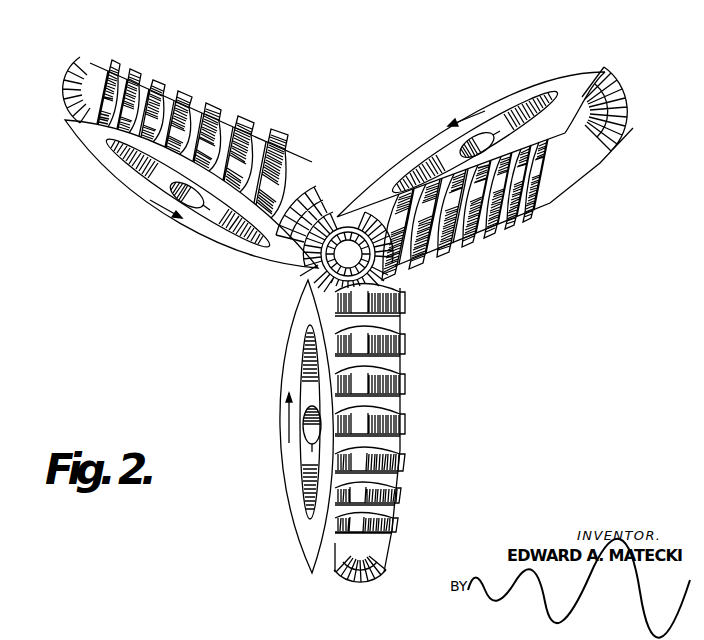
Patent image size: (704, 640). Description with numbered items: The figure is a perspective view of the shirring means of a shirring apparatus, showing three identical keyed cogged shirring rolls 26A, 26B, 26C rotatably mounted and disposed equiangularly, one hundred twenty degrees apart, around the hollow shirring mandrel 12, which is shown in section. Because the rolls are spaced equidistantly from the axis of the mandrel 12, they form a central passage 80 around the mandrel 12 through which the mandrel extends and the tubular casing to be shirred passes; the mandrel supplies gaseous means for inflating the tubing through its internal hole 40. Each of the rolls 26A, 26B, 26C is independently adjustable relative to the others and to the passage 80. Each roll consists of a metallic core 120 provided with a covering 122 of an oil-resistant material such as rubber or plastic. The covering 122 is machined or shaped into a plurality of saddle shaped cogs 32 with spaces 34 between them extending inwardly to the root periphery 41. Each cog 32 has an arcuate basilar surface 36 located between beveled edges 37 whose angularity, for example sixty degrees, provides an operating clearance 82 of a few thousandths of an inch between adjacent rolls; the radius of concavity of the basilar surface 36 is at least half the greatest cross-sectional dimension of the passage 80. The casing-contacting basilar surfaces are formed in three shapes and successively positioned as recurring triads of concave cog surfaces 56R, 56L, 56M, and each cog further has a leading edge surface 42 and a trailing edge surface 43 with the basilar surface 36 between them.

The mandrel 12 is at (350, 250).
The passage 80 is at (346, 233).
The internal hole 40 is at (367, 262).
The operating clearance 82 is at (313, 270).
The cogged shirring roll 26A is at (360, 307).
The cogged shirring roll 26B is at (578, 203).
The cogged shirring roll 26C is at (220, 95).
The covering 122 is at (187, 223).
The metallic core 120 is at (153, 183).
The saddle shaped cogs 32 is at (270, 150).
The spaces 34 is at (245, 132).
The arcuate basilar surface 36 is at (294, 178).
The beveled edges 37 is at (286, 163).
The root periphery 41 is at (147, 98).
The leading edge surface 42 is at (120, 102).
The trailing edge surface 43 is at (170, 86).
The concave cog surface 56L is at (197, 92).
The concave cog surface 56R is at (155, 135).
The concave cog surface 56M is at (150, 130).